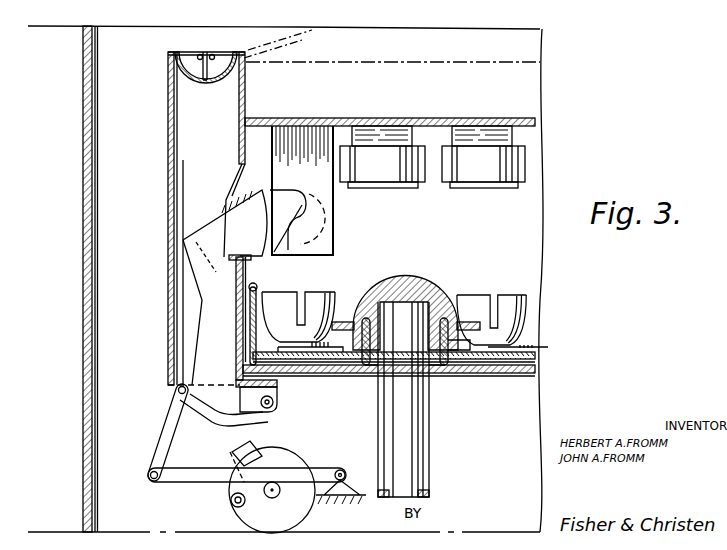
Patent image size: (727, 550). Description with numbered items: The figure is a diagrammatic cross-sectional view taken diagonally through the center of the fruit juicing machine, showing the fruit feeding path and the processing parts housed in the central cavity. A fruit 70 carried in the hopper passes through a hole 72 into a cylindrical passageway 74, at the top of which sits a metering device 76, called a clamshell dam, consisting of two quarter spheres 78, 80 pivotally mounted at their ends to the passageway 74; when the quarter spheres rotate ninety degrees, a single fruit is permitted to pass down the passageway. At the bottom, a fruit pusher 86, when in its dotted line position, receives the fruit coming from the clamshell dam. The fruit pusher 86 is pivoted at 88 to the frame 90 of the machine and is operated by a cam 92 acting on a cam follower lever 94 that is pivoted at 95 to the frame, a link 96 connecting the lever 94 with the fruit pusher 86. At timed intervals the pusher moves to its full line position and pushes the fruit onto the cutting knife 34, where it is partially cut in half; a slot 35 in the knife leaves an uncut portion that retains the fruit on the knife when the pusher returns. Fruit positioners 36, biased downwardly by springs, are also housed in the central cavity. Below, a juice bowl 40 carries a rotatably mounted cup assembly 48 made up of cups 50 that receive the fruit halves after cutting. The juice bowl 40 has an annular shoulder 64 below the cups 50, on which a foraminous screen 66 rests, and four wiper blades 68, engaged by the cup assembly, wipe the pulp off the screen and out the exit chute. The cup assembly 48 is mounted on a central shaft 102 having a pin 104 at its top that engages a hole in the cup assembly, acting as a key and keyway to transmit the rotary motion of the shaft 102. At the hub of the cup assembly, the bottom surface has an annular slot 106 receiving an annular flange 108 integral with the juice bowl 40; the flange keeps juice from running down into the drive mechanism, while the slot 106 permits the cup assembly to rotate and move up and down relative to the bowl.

The cutting knife 34 is at (318, 204).
The slot 35 is at (296, 220).
The fruit positioners 36 is at (470, 152).
The juice bowl 40 is at (258, 294).
The cup assembly 48 is at (438, 290).
The cups 50 is at (318, 298).
The annular shoulder 64 is at (243, 352).
The foraminous screen 66 is at (538, 362).
The wiper blades 68 is at (252, 346).
The fruit 70 is at (300, 184).
The hole 72 is at (198, 50).
The cylindrical passageway 74 is at (183, 160).
The metering device 76 is at (206, 82).
The quarter sphere 78 is at (172, 53).
The quarter sphere 80 is at (222, 52).
The fruit pusher 86 is at (176, 256).
The pivot 88 is at (278, 409).
The frame 90 is at (277, 390).
The cam 92 is at (292, 521).
The cam follower lever 94 is at (222, 472).
The pivot 95 is at (341, 468).
The link 96 is at (166, 428).
The central shaft 102 is at (432, 425).
The pin 104 is at (421, 292).
The annular slot 106 is at (458, 326).
The annular flange 108 is at (437, 378).